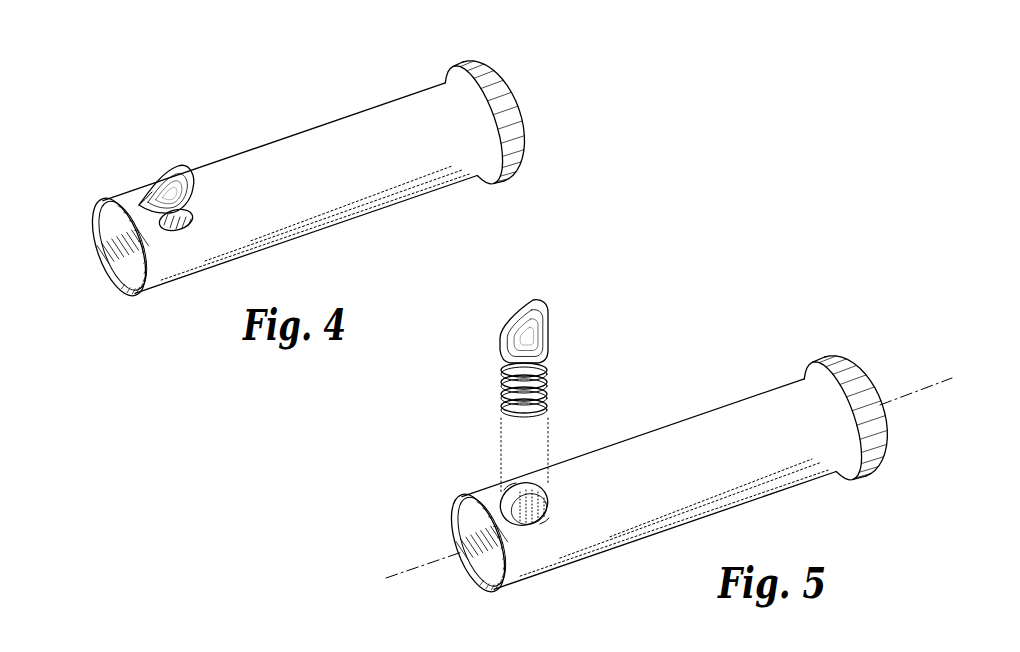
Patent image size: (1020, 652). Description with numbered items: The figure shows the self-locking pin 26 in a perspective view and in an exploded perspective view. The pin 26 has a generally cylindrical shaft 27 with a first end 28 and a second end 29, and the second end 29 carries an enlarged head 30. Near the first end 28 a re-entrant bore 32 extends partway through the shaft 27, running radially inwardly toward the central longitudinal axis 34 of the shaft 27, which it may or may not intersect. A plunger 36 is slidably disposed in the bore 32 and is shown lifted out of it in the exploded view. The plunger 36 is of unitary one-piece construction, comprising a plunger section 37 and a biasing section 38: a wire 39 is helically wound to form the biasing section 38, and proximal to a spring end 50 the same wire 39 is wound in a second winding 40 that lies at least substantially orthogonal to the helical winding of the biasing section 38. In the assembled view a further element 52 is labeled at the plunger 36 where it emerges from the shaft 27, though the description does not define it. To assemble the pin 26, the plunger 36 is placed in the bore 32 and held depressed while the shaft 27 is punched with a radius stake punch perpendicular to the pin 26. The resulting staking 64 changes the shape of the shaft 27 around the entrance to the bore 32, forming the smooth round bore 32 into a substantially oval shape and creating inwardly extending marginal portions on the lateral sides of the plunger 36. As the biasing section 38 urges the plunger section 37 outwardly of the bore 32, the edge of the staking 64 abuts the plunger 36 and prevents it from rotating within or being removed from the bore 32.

In FIG. 4, the self-locking pin 26 is at (310, 164).
In FIG. 5, the self-locking pin 26 is at (661, 459).
In FIG. 4, the shaft 27 is at (342, 140).
In FIG. 5, the shaft 27 is at (708, 440).
In FIG. 4, the first end 28 is at (96, 252).
In FIG. 5, the first end 28 is at (463, 554).
In FIG. 4, the second end 29 is at (441, 80).
In FIG. 5, the second end 29 is at (802, 378).
In FIG. 4, the enlarged head 30 is at (483, 96).
In FIG. 5, the enlarged head 30 is at (843, 393).
In FIG. 5, the re-entrant bore 32 is at (533, 509).
In FIG. 5, the central longitudinal axis 34 is at (413, 568).
In FIG. 4, the plunger 36 is at (134, 161).
In FIG. 5, the plunger 36 is at (521, 369).
In FIG. 4, the plunger section 37 is at (158, 178).
In FIG. 5, the plunger section 37 is at (521, 333).
In FIG. 5, the biasing section 38 is at (521, 424).
In FIG. 5, the wire 39 is at (505, 380).
In FIG. 5, the second winding 40 is at (510, 317).
In FIG. 5, the spring end 50 is at (501, 348).
In FIG. 4, the tip of loop 52 is at (138, 187).
In FIG. 5, the staking 64 is at (515, 483).